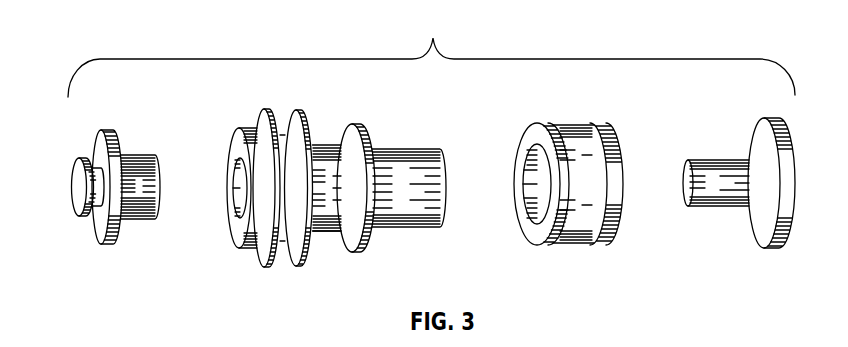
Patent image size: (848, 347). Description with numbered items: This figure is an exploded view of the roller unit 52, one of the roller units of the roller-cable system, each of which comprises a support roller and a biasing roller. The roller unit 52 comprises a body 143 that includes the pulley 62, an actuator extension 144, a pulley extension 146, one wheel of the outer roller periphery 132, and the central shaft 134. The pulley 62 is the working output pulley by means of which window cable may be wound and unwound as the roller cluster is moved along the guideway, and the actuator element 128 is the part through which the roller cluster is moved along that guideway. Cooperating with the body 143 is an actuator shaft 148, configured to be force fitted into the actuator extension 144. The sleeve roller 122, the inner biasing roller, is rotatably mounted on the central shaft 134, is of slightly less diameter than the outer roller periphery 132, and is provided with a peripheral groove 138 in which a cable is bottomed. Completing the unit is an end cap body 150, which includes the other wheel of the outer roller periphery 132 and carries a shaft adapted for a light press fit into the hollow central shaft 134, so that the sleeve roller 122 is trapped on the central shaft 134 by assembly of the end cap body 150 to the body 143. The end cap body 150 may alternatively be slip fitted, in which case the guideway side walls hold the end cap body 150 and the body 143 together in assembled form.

The roller unit 52 is at (431, 56).
The actuator element 128 is at (77, 197).
The actuator shaft 148 is at (143, 219).
The actuator extension 144 is at (234, 226).
The pulley 62 is at (274, 108).
The pulley extension 146 is at (330, 231).
The outer roller periphery 132 is at (347, 118).
The central shaft 134 is at (400, 147).
The body 143 is at (374, 250).
The sleeve roller 122 is at (557, 122).
The peripheral groove 138 is at (544, 243).
The end cap body 150 is at (747, 228).